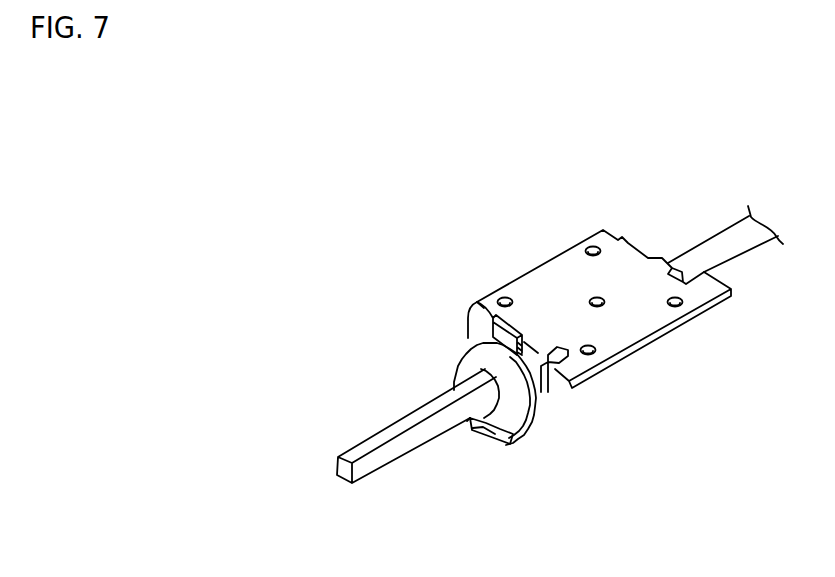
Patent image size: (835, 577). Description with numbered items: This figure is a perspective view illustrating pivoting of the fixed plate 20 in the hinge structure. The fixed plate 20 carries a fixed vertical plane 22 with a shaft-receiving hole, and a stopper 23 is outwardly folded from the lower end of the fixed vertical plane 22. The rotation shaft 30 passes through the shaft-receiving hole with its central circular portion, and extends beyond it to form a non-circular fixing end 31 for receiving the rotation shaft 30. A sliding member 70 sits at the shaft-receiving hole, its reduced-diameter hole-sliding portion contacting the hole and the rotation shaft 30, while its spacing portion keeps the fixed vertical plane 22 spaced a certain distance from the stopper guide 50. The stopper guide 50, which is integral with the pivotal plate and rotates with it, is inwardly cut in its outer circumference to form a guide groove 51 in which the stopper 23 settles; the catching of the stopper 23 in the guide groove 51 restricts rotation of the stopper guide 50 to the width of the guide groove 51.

The fixed plate 20 is at (548, 277).
The fixed vertical plane 22 is at (552, 396).
The stopper 23 is at (467, 421).
The rotation shaft 30 is at (737, 242).
The non-circular fixing end 31 is at (386, 454).
The stopper guide 50 is at (465, 338).
The guide groove 51 is at (500, 446).
The sliding member 70 is at (476, 302).